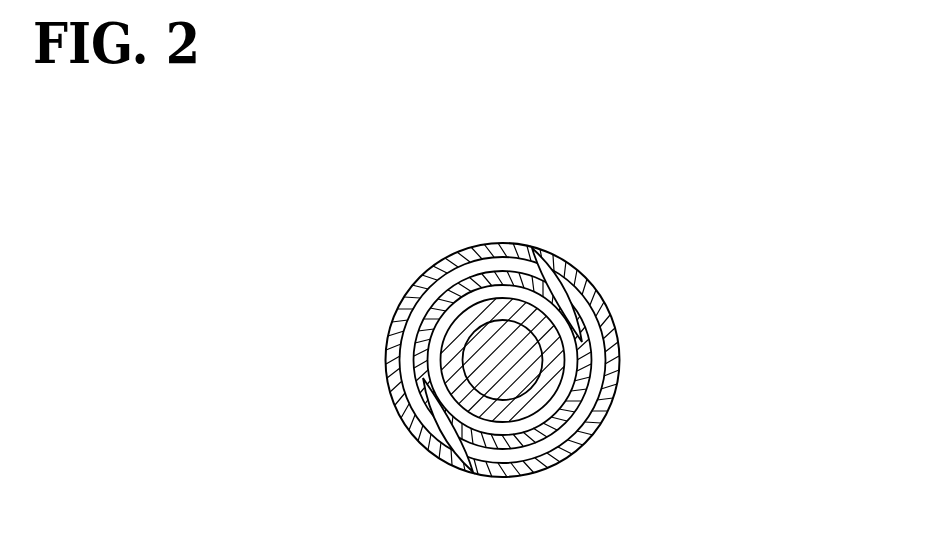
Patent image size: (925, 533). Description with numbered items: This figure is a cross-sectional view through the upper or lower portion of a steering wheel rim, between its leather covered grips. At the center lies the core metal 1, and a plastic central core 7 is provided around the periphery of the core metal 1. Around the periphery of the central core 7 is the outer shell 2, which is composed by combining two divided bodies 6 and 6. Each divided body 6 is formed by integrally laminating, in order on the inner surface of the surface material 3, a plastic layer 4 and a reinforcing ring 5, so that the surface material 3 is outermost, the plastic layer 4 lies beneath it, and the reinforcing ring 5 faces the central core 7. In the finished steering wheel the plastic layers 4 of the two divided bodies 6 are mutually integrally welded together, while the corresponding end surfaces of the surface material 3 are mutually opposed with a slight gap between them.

The core metal 1 is at (530, 352).
The outer shell 2 is at (147, 280).
The surface material 3 is at (418, 288).
The plastic layer 4 is at (418, 316).
The reinforcing ring 5 is at (420, 323).
The divided body 6 is at (330, 473).
The central core 7 is at (542, 313).